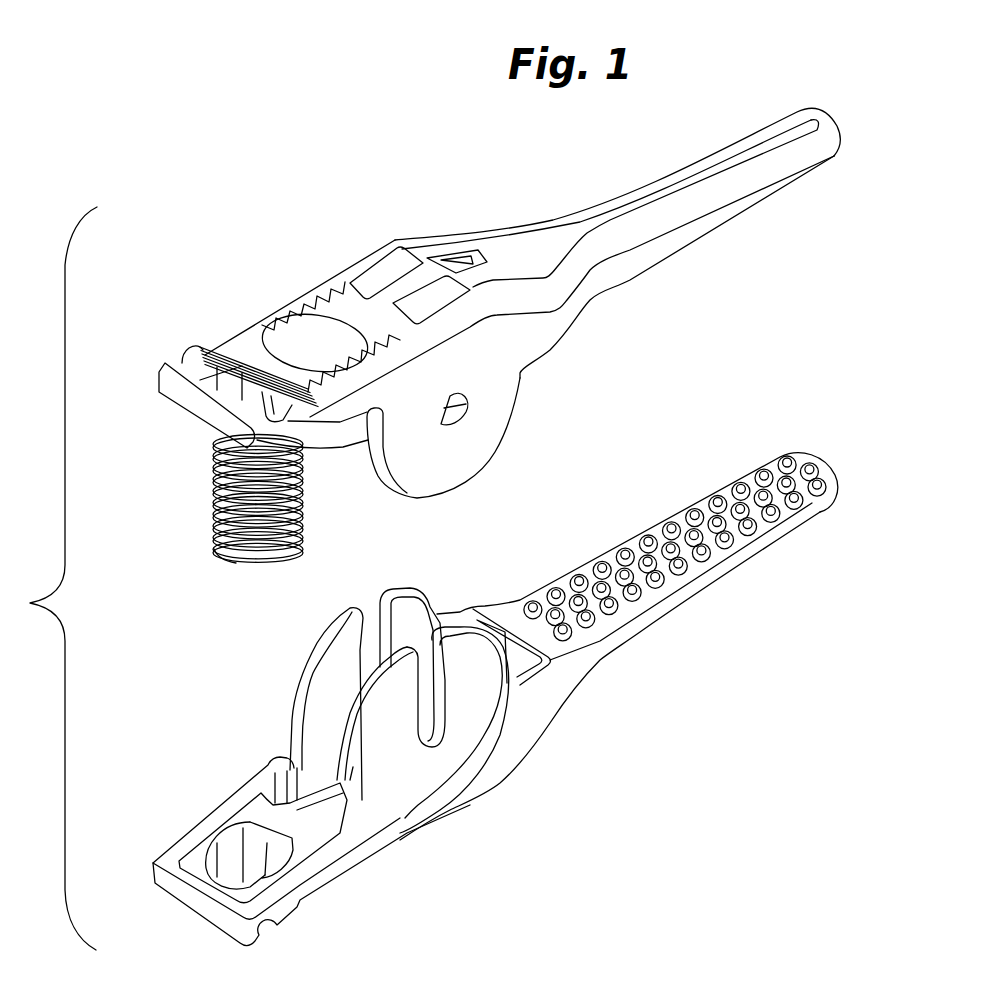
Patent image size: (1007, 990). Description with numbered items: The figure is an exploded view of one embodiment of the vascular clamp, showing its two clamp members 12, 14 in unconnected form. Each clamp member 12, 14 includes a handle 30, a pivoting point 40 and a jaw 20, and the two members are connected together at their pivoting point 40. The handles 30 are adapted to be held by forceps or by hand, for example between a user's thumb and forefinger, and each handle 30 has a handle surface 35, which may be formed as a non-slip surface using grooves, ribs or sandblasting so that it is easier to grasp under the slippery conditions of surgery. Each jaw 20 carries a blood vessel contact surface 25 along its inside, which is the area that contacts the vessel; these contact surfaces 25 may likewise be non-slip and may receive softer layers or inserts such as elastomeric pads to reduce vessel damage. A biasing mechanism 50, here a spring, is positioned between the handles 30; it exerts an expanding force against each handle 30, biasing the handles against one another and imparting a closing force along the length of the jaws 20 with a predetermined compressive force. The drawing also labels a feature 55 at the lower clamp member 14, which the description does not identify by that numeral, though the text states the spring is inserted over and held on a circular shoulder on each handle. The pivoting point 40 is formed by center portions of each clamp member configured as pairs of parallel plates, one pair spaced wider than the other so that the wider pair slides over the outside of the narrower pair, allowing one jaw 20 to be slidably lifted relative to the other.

The clamp member 12 is at (360, 190).
The clamp member 14 is at (664, 794).
The jaw 20 is at (742, 133).
The blood vessel contact surface 25 is at (787, 177).
The handle 30 is at (194, 352).
The handle surface 35 is at (285, 330).
The pivoting point 40 is at (503, 405).
The biasing mechanism 50 is at (210, 472).
The spring post 55 is at (236, 836).